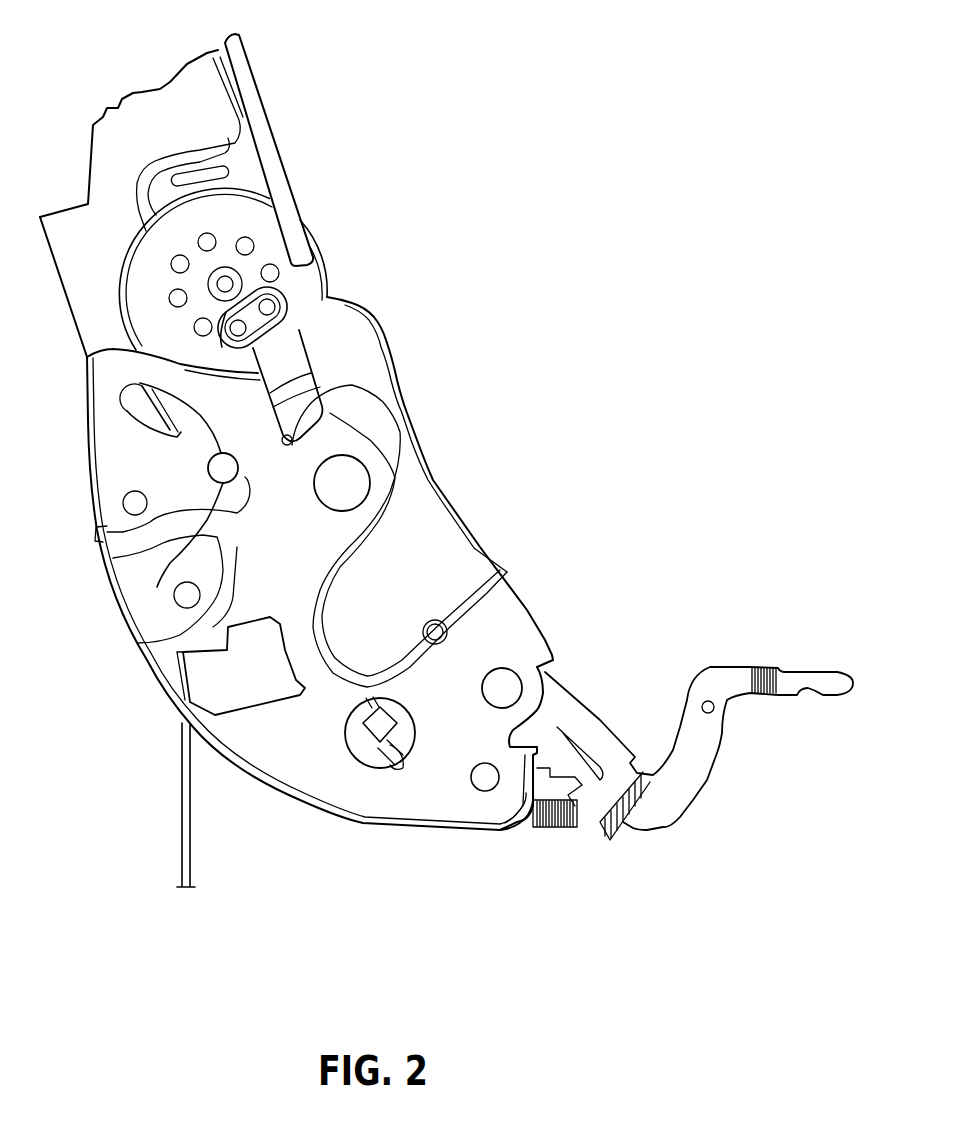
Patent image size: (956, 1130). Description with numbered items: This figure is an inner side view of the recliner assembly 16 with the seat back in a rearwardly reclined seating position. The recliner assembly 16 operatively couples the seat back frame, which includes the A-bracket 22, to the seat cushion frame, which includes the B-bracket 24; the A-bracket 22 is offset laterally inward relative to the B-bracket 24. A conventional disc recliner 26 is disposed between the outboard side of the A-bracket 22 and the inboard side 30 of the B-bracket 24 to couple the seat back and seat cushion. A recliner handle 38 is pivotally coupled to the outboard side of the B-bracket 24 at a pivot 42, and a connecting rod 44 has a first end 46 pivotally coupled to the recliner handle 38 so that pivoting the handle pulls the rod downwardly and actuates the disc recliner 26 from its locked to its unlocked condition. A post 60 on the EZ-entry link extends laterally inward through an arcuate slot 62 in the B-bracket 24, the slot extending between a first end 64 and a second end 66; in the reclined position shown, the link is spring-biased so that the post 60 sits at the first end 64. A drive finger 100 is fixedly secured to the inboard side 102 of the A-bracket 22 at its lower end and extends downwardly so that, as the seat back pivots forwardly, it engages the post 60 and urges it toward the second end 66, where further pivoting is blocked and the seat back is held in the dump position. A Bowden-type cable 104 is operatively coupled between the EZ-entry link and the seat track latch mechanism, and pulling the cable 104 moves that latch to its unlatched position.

The recliner assembly 16 is at (462, 270).
The A-bracket 22 is at (178, 97).
The B-bracket 24 is at (453, 553).
The disc recliner 26 is at (315, 288).
The inboard side 30 is at (399, 536).
The recliner handle 38 is at (737, 677).
The pivot 42 is at (507, 683).
The connecting rod 44 is at (147, 402).
The first end 46 is at (400, 770).
The post 60 is at (222, 470).
The arcuate slot 62 is at (140, 418).
The first end 64 is at (173, 595).
The second end 66 is at (120, 390).
The drive finger 100 is at (303, 402).
The inboard side 102 is at (129, 203).
The Bowden-type cable 104 is at (185, 828).